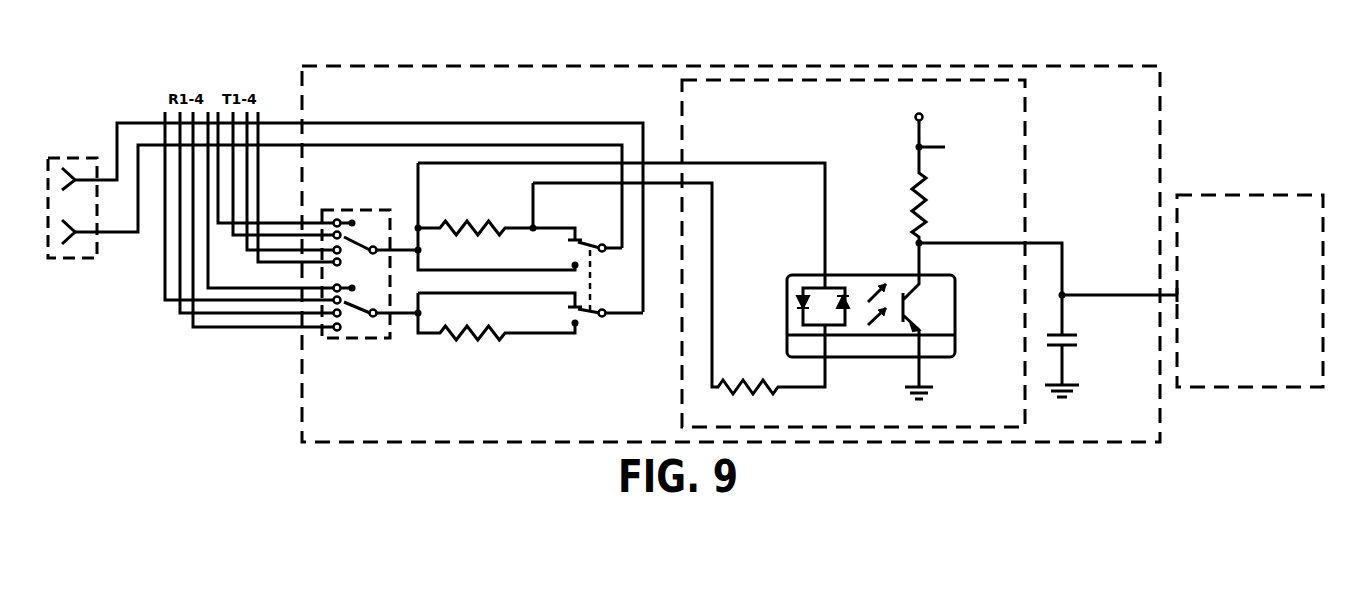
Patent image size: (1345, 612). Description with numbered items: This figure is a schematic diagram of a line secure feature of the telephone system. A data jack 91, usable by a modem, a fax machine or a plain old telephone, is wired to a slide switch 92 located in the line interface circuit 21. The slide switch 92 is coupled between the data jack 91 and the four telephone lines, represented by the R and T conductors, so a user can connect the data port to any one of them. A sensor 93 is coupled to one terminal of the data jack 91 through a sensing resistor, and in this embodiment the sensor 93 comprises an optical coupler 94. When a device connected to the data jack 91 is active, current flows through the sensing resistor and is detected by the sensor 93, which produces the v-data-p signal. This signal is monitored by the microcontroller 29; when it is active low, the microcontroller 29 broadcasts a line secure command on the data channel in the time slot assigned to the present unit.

The line interface circuit 21 is at (347, 66).
The microcontroller 29 is at (1227, 195).
The data jack 91 is at (72, 258).
The slide switch 92 is at (355, 338).
The sensor 93 is at (1027, 117).
The optical coupler 94 is at (868, 368).